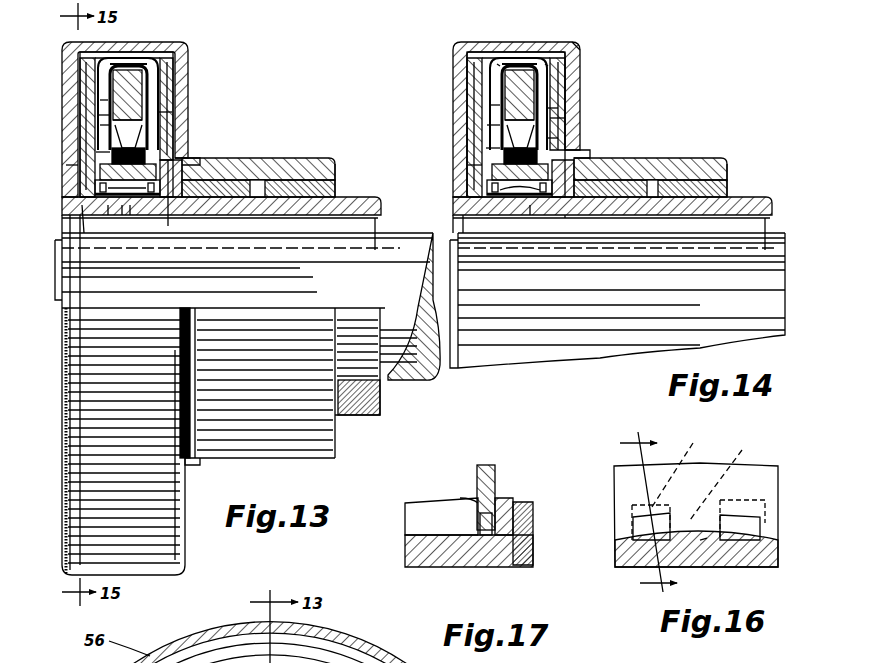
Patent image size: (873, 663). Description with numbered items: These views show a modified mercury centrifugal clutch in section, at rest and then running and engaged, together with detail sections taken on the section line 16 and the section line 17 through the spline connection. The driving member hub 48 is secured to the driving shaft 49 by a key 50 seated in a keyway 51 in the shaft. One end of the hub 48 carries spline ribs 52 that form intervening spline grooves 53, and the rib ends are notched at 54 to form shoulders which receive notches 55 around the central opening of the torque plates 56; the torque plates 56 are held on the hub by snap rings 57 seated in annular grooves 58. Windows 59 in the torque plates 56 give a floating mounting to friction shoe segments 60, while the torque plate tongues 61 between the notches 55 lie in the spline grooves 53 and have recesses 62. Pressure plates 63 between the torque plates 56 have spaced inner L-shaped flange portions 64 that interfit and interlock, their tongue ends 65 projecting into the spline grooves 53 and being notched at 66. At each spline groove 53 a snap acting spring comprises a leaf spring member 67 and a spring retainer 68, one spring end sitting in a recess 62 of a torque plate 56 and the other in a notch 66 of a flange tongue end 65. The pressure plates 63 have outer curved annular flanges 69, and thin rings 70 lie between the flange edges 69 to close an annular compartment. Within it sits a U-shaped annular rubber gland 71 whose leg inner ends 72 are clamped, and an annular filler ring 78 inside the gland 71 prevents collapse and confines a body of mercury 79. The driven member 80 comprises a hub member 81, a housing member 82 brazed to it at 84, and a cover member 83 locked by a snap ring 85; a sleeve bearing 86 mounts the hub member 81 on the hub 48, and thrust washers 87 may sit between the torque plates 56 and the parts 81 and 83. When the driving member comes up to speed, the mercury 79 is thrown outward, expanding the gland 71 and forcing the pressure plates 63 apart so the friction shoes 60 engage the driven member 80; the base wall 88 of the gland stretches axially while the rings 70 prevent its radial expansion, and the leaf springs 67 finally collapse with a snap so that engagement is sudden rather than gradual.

In FIG. 13, the section line 16- 16 is at (170, 224).
In FIG. 16, the section line 17- 17 is at (661, 514).
In FIG. 13, the driving member hub 48 is at (358, 206).
In FIG. 14, the driving member hub 48 is at (745, 202).
In FIG. 13, the driving shaft 49 is at (70, 288).
In FIG. 14, the driving shaft 49 is at (480, 300).
In FIG. 13, the key 50 is at (247, 299).
In FIG. 14, the key 50 is at (617, 294).
In FIG. 13, the keyway 51 is at (326, 250).
In FIG. 14, the keyway 51 is at (700, 250).
In FIG. 13, the spline ribs 52 is at (85, 226).
In FIG. 17, the spline ribs 52 is at (416, 510).
In FIG. 16, the spline ribs 52 is at (660, 520).
In FIG. 16, the spline grooves 53 is at (707, 538).
In FIG. 17, the notches 54 is at (460, 498).
In FIG. 16, the notches 54 is at (686, 472).
In FIG. 17, the notches 55 is at (475, 560).
In FIG. 16, the notches 55 is at (630, 540).
In FIG. 13, the torque plates 56 is at (92, 62).
In FIG. 14, the torque plates 56 is at (472, 80).
In FIG. 17, the torque plates 56 is at (495, 470).
In FIG. 16, the torque plates 56 is at (625, 491).
In FIG. 13, the snap rings 57 is at (92, 190).
In FIG. 14, the snap rings 57 is at (578, 195).
In FIG. 17, the snap rings 57 is at (505, 510).
In FIG. 13, the annular grooves 58 is at (82, 205).
In FIG. 14, the annular grooves 58 is at (570, 216).
In FIG. 17, the annular grooves 58 is at (507, 563).
In FIG. 13, the windows 59 is at (160, 90).
In FIG. 14, the windows 59 is at (552, 68).
In FIG. 13, the friction shoe segments 60 is at (97, 115).
In FIG. 14, the friction shoe segments 60 is at (490, 105).
In FIG. 16, the torque plate tongues 61 is at (731, 477).
In FIG. 13, the recesses 62 is at (70, 208).
In FIG. 14, the recesses 62 is at (475, 218).
In FIG. 17, the recesses 62 is at (486, 545).
In FIG. 16, the recesses 62 is at (725, 500).
In FIG. 13, the pressure plates 63 is at (85, 80).
In FIG. 14, the pressure plates 63 is at (482, 90).
In FIG. 13, the L-shaped flange portions 64 is at (190, 180).
In FIG. 14, the L-shaped flange portions 64 is at (520, 142).
In FIG. 13, the tongue ends 65 is at (110, 178).
In FIG. 14, the tongue ends 65 is at (545, 210).
In FIG. 13, the notches 66 is at (130, 205).
In FIG. 14, the notches 66 is at (530, 205).
In FIG. 13, the leaf spring member 67 is at (122, 205).
In FIG. 13, the spring retainer 68 is at (112, 205).
In FIG. 13, the outer curved annular flanges 69 is at (152, 63).
In FIG. 14, the outer curved annular flanges 69 is at (497, 64).
In FIG. 13, the thin rings 70 is at (128, 70).
In FIG. 14, the thin rings 70 is at (520, 70).
In FIG. 13, the U-shaped annular rubber gland 71 is at (100, 100).
In FIG. 14, the U-shaped annular rubber gland 71 is at (487, 125).
In FIG. 13, the inner ends 72 is at (100, 152).
In FIG. 14, the inner ends 72 is at (555, 138).
In FIG. 13, the annular filler ring 78 is at (105, 125).
In FIG. 14, the annular filler ring 78 is at (558, 108).
In FIG. 13, the body of mercury 79 is at (160, 148).
In FIG. 13, the driven member 80 is at (290, 158).
In FIG. 14, the driven member 80 is at (707, 152).
In FIG. 13, the hub member 81 is at (333, 163).
In FIG. 14, the hub member 81 is at (730, 166).
In FIG. 13, the housing member 82 is at (70, 490).
In FIG. 14, the housing member 82 is at (578, 53).
In FIG. 13, the cover member 83 is at (70, 165).
In FIG. 14, the cover member 83 is at (470, 165).
In FIG. 13, the brazed joint 84 is at (178, 165).
In FIG. 14, the brazed joint 84 is at (580, 160).
In FIG. 13, the snap ring 85 is at (66, 60).
In FIG. 14, the snap ring 85 is at (458, 58).
In FIG. 13, the sleeve bearing 86 is at (322, 190).
In FIG. 14, the sleeve bearing 86 is at (662, 215).
In FIG. 13, the thrust washers 87 is at (168, 175).
In FIG. 14, the thrust washers 87 is at (468, 185).
In FIG. 14, the base wall 88 is at (515, 62).